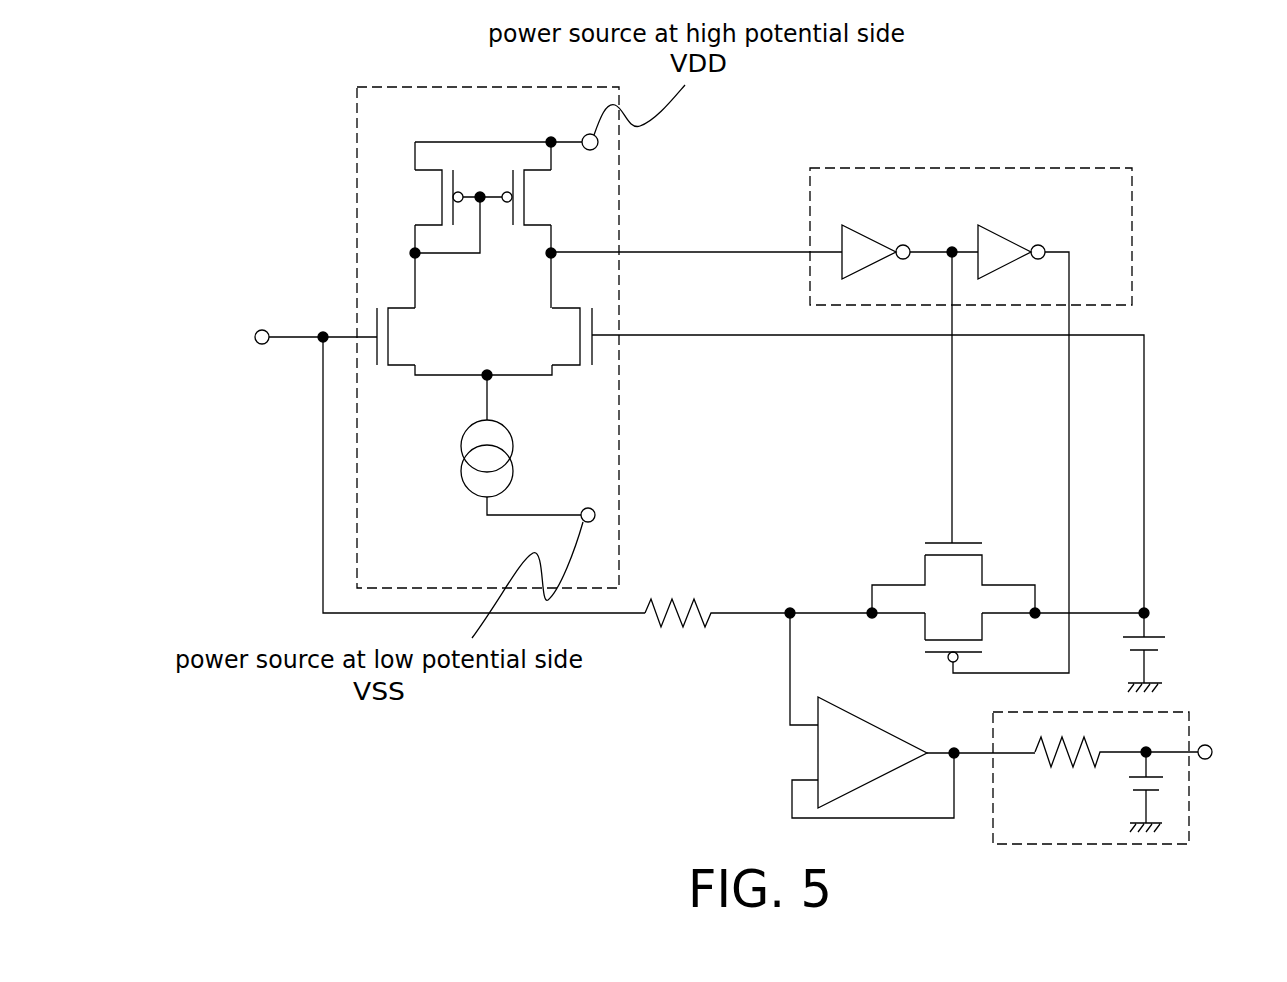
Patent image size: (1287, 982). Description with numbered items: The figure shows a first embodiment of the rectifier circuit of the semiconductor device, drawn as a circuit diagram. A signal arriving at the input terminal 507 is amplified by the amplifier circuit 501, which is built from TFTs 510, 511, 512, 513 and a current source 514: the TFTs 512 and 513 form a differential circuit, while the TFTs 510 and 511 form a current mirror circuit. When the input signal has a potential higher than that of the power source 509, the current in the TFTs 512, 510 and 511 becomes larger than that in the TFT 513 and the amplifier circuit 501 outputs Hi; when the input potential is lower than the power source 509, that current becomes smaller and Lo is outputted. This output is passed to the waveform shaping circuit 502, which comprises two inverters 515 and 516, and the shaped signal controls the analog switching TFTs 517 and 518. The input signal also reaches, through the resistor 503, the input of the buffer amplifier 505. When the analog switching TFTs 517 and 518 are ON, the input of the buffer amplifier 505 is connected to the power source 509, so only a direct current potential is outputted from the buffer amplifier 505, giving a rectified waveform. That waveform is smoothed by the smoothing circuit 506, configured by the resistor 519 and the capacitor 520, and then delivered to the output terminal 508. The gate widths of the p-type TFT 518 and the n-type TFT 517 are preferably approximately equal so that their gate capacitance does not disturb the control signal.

The amplifier circuit 501 is at (618, 187).
The waveform shaping circuit 502 is at (972, 165).
The resistor 503 is at (688, 640).
The buffer amplifier 505 is at (795, 753).
The smoothing circuit 506 is at (1188, 710).
The input terminal 507 is at (285, 305).
The output terminal 508 is at (1210, 760).
The power source 509 is at (1162, 628).
The TFT 510 is at (428, 215).
The TFT 511 is at (540, 210).
The TFT 512 is at (397, 357).
The TFT 513 is at (570, 348).
The current source 514 is at (517, 442).
The inverter 515 is at (883, 233).
The inverter 516 is at (1020, 233).
The analog switching TFT 517 is at (925, 558).
The analog switching TFT 518 is at (918, 627).
The resistor 519 is at (1048, 763).
The capacitor 520 is at (1123, 783).